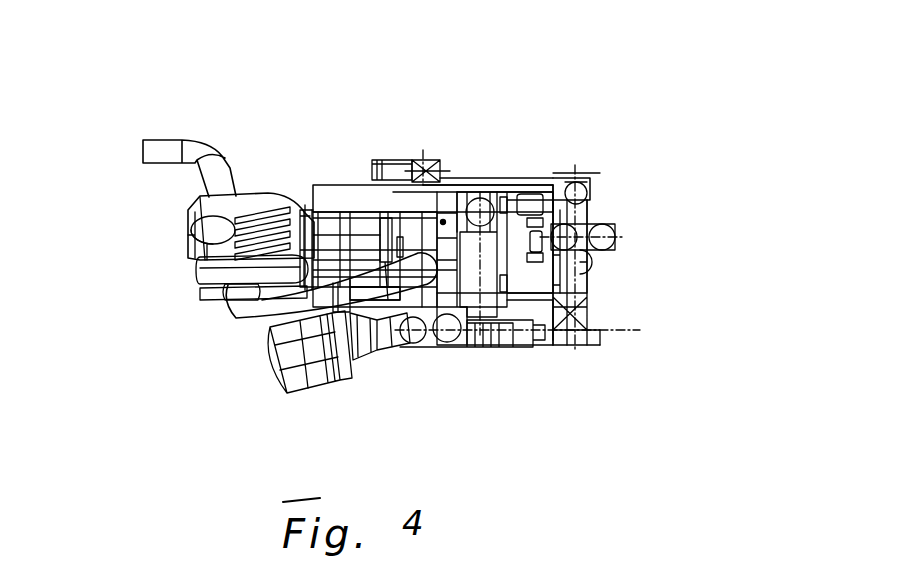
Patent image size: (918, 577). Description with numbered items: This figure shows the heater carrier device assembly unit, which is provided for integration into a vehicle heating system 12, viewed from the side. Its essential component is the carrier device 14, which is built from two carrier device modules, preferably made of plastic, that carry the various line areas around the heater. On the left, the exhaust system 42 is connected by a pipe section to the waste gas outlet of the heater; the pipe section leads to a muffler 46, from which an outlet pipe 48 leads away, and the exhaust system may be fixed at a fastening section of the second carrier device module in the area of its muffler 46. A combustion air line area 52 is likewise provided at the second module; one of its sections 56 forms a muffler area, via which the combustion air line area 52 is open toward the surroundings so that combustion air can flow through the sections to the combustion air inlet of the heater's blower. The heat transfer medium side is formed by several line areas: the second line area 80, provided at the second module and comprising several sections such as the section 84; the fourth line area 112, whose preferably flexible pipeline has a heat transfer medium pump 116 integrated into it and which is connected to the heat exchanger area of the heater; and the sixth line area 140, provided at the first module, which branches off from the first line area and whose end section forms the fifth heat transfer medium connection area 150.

The heating system 12 is at (657, 120).
The carrier device 14 is at (530, 121).
The exhaust system 42 is at (200, 315).
The muffler 46 is at (200, 217).
The outlet pipe 48 is at (163, 167).
The combustion air line area 52 is at (505, 266).
The section 56 is at (467, 317).
The second line area 80 is at (588, 286).
The section 84 is at (587, 228).
The fourth line area 112 is at (398, 345).
The heat transfer medium pump 116 is at (322, 388).
The sixth line area 140 is at (423, 150).
The fifth heat transfer medium connection area 150 is at (381, 150).